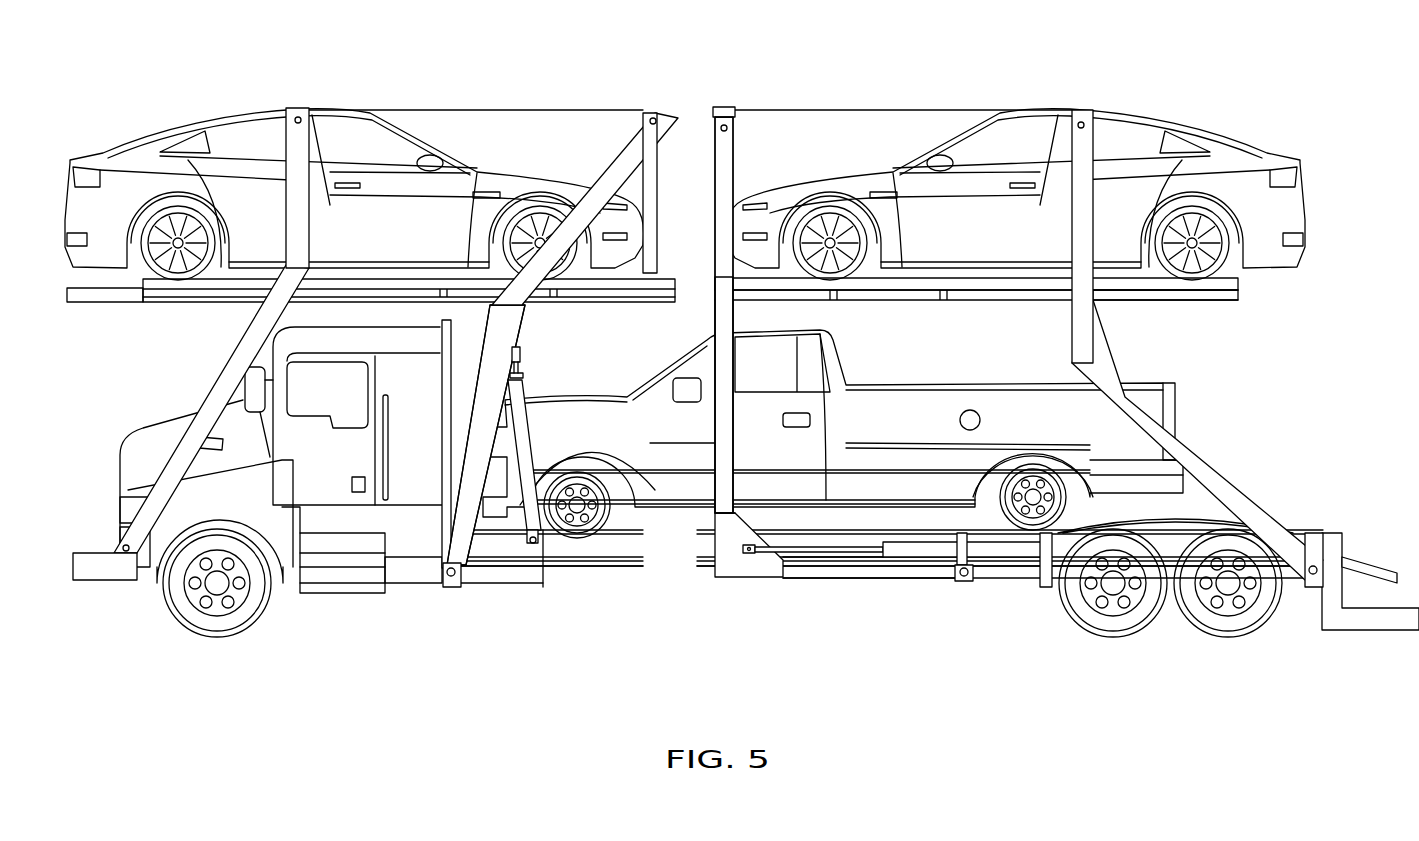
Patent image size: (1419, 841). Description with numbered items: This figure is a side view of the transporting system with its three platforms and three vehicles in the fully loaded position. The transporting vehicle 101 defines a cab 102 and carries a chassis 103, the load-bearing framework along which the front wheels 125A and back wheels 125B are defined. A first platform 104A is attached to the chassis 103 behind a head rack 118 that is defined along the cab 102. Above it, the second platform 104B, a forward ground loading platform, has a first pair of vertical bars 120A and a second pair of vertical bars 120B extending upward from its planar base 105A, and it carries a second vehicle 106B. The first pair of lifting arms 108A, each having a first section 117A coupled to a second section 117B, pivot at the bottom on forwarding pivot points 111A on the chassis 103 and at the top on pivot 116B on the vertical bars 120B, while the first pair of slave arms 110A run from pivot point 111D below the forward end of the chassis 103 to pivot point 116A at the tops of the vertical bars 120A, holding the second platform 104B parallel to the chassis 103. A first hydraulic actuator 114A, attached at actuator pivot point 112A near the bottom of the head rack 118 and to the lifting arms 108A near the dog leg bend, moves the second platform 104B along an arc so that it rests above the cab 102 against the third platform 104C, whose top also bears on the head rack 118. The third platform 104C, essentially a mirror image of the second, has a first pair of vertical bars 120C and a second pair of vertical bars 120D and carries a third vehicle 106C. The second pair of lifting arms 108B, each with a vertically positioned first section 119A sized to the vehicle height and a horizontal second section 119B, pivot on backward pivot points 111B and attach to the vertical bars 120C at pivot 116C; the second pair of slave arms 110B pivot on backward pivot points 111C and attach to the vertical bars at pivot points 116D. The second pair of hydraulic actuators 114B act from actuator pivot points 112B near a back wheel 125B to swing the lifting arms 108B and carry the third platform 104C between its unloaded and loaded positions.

The transporting vehicle 101 is at (889, 547).
The cab 102 is at (340, 511).
The chassis 103 is at (398, 568).
The first platform 104A is at (800, 535).
The second platform 104B is at (200, 303).
The third platform 104C is at (1206, 305).
The planar base 105A is at (119, 293).
The second vehicle 106B is at (182, 142).
The third vehicle 106C is at (1235, 143).
The first pair of lifting arms 108A is at (466, 502).
The second pair of lifting arms 108B is at (724, 313).
The first pair of slave arms 110A is at (224, 388).
The second pair of slave arms 110B is at (1101, 345).
The forwarding pivot points 111A is at (451, 580).
The backward pivot points 111B is at (961, 576).
The backward pivot points 111C is at (1312, 580).
The pivot point 111D is at (128, 553).
The actuator pivot points 112A is at (534, 538).
The actuator pivot points 112B is at (1045, 560).
The first hydraulic actuator 114A is at (521, 395).
The second pair of hydraulic actuators 114B is at (925, 560).
The pivot point 116A is at (306, 117).
The pivot 116B is at (660, 117).
The pivot 116C is at (737, 127).
The pivot points 116D is at (1092, 125).
The first section 117A is at (609, 173).
The second section 117B is at (471, 466).
The head rack 118 is at (446, 487).
The first section 119A is at (722, 283).
The second section 119B is at (875, 563).
The first pair of vertical bars 120A is at (292, 107).
The second pair of vertical bars 120B is at (648, 178).
The first pair of vertical bars 120C is at (736, 107).
The second pair of vertical bars 120D is at (1086, 107).
The front wheels 125A is at (205, 638).
The back wheels 125B is at (1228, 640).